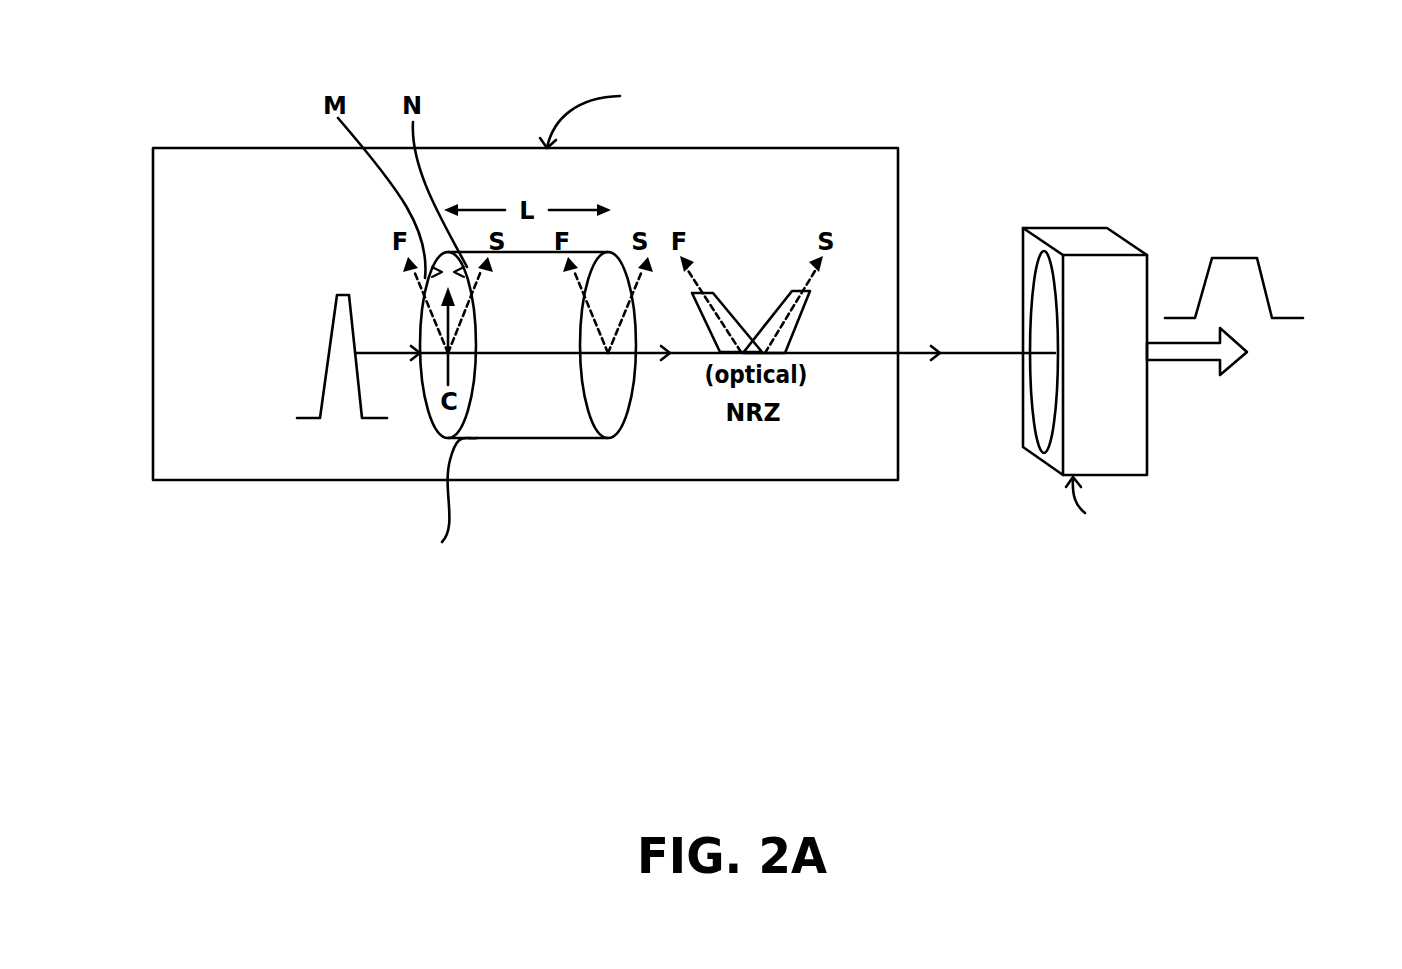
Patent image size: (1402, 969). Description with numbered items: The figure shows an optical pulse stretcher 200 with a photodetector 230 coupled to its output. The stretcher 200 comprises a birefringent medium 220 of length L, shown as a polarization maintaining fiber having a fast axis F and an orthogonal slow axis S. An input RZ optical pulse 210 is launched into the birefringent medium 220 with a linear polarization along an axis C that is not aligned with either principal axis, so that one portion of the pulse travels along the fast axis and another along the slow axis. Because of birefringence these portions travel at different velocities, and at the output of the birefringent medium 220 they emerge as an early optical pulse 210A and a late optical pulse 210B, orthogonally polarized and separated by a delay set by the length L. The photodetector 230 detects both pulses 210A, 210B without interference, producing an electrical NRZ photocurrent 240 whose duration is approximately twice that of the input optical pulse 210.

The optical pulse stretcher 200 is at (898, 185).
The optical pulse 210 is at (308, 420).
The early optical pulse 210A is at (727, 292).
The late optical pulse 210B is at (793, 332).
The birefringent medium 220 is at (525, 438).
The photodetector 230 is at (1060, 228).
The photocurrent 240 is at (1265, 287).